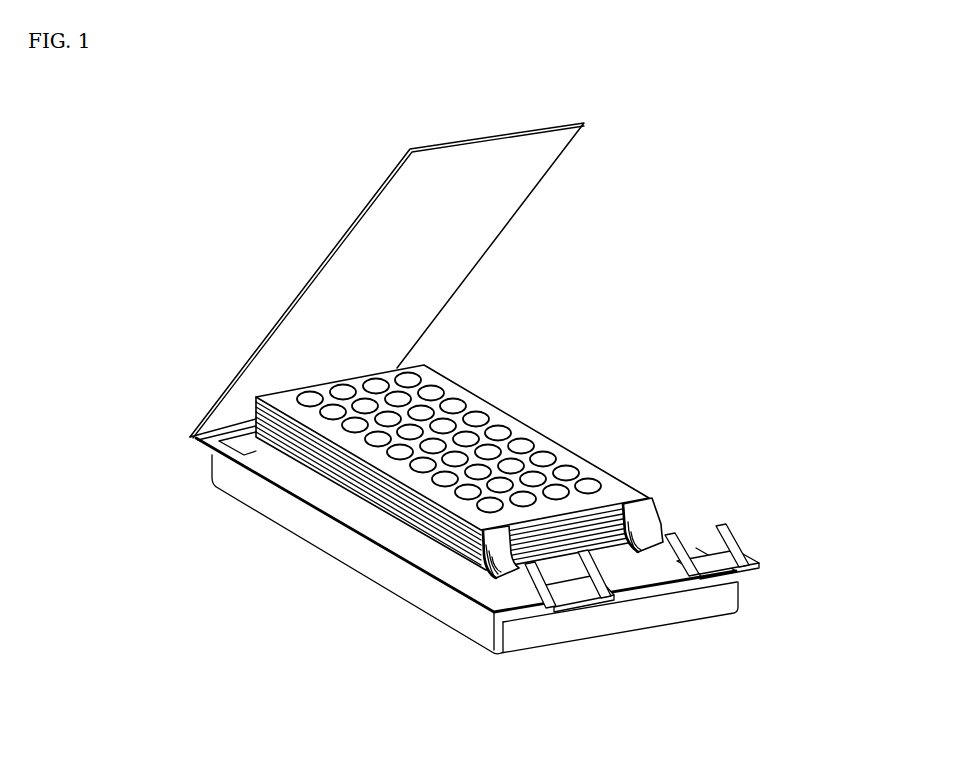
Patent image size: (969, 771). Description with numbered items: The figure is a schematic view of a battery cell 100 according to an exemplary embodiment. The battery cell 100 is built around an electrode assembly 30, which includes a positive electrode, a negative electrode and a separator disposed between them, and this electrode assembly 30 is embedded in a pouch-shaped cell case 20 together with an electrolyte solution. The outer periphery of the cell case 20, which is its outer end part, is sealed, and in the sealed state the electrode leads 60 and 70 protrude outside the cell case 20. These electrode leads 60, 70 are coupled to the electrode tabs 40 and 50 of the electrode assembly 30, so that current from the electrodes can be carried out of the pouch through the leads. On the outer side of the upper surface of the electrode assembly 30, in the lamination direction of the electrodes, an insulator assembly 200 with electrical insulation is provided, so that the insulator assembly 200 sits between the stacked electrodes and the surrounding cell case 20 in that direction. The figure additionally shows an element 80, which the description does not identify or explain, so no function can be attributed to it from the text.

The battery cell 100 is at (162, 196).
The cell case 20 is at (188, 431).
The electrode assembly 30 is at (463, 440).
The insulator assembly 200 is at (613, 487).
The electrode tab 40 is at (476, 552).
The electrode tab 50 is at (664, 522).
The electrode lead 60 is at (489, 609).
The electrode lead 70 is at (722, 542).
The bottom plate 80 is at (540, 600).